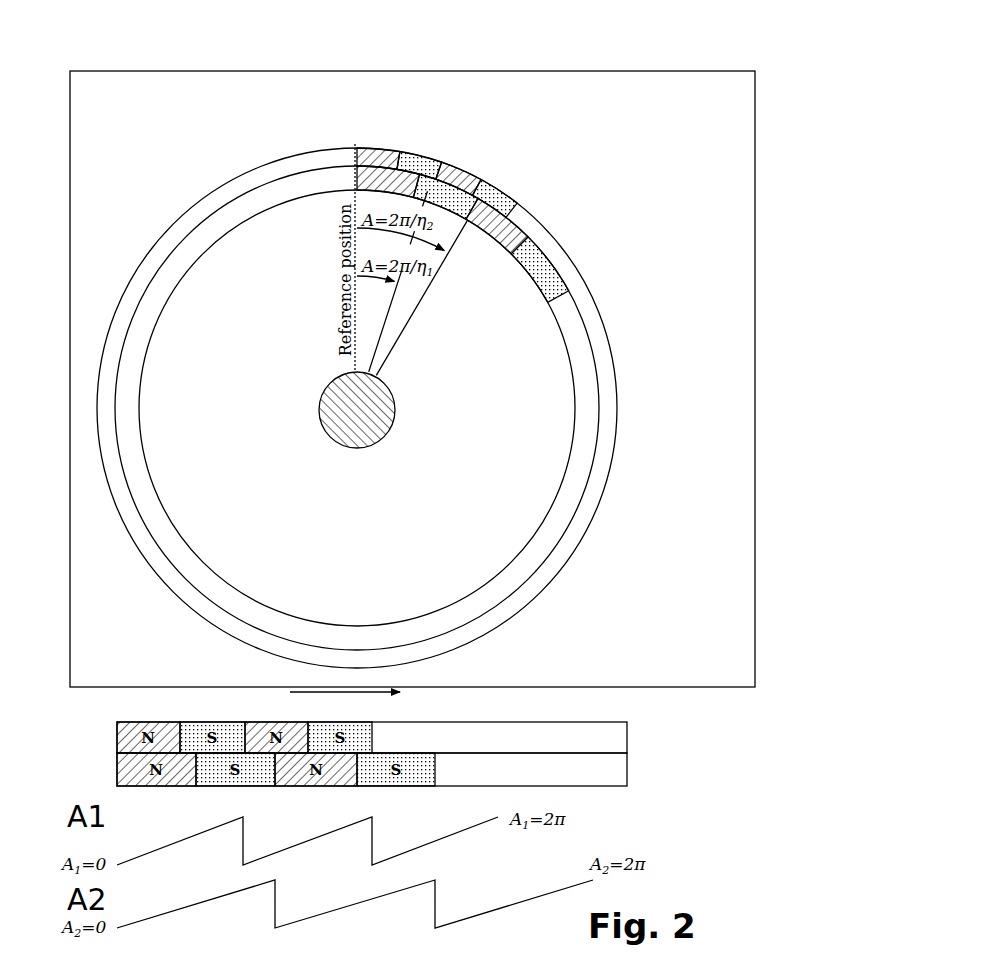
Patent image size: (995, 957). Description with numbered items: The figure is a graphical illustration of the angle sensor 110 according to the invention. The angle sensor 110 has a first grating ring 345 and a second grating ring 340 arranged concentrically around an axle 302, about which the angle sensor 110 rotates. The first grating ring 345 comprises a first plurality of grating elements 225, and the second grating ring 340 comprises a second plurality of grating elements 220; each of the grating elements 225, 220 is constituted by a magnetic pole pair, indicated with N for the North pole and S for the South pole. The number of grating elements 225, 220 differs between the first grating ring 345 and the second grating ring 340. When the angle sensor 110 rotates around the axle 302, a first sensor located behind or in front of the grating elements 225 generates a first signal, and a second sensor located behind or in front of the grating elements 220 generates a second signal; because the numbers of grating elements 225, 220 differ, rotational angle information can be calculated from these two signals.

The angle sensor 110 is at (613, 43).
The grating elements 225 is at (360, 138).
The first grating ring 345 is at (527, 225).
The second grating ring 340 is at (563, 317).
The grating elements 220 is at (467, 237).
The axle 302 is at (397, 422).